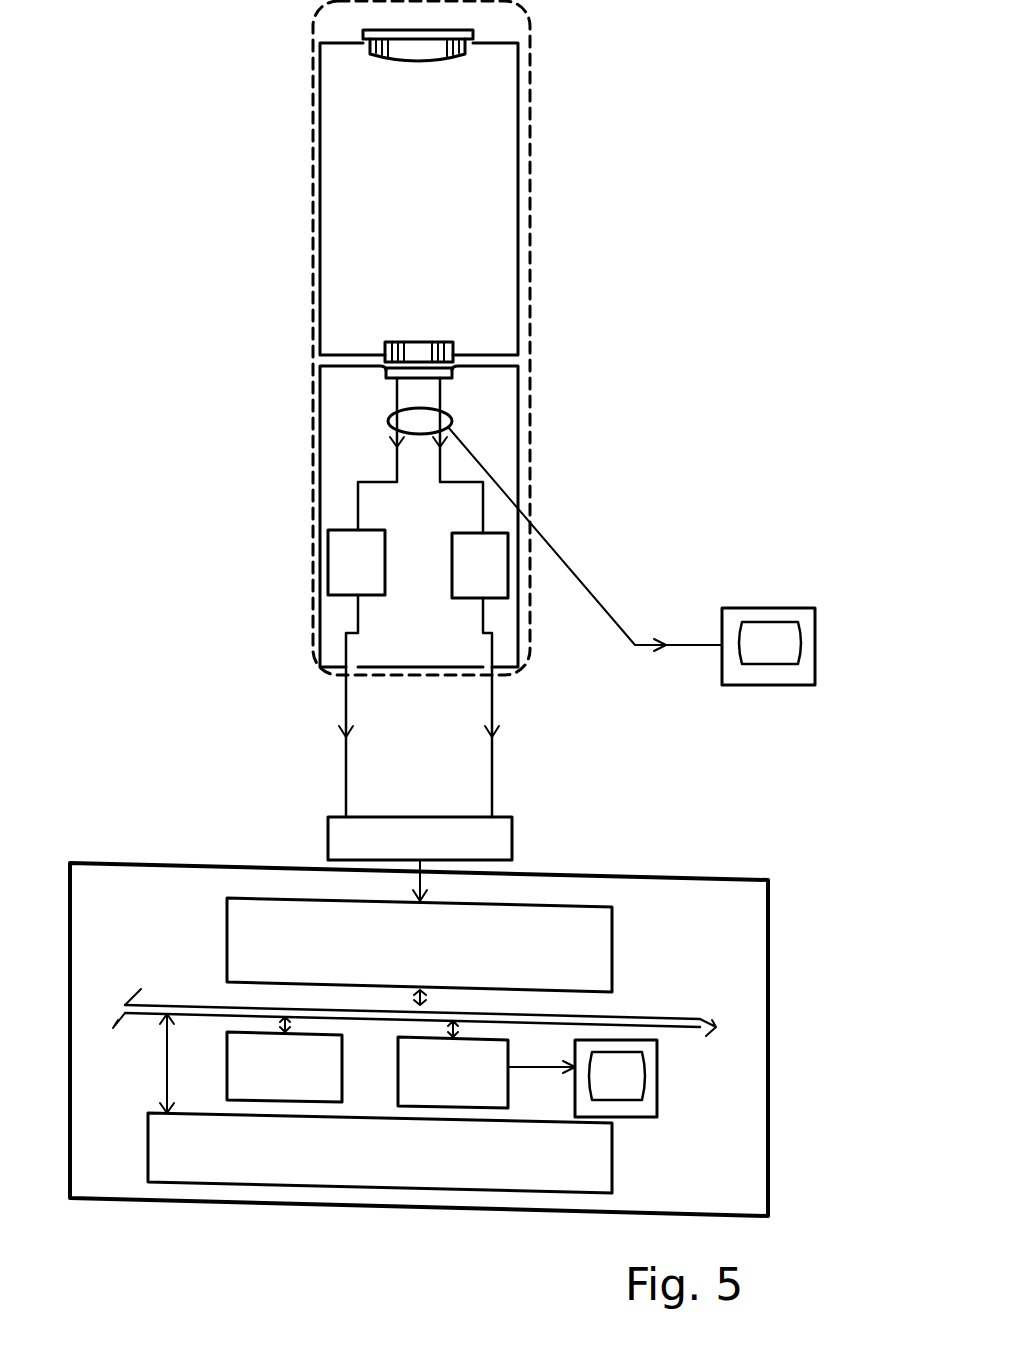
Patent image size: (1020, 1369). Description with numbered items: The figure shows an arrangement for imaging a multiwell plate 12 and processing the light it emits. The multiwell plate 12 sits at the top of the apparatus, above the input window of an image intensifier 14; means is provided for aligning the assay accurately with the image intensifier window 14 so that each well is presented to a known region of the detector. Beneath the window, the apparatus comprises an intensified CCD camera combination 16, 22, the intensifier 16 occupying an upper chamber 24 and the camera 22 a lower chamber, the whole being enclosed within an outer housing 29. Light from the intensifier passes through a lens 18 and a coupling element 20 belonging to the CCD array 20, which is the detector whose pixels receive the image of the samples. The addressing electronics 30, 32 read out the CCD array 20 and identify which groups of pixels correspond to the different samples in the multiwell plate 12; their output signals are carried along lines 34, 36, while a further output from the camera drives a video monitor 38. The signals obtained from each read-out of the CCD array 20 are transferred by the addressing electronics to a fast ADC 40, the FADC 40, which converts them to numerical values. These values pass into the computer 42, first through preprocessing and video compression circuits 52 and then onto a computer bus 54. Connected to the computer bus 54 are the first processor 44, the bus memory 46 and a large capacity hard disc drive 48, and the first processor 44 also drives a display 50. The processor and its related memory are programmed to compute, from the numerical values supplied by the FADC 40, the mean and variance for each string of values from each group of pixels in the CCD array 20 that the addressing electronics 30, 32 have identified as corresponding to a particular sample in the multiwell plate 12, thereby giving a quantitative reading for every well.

The multiwell plate 12 is at (363, 32).
The image intensifier window 14 is at (473, 36).
The intensified CCD camera combination 16 is at (521, 112).
The lens 18 is at (405, 342).
The CCD array 20 is at (386, 378).
The intensified CCD camera combination 22 is at (520, 470).
The upper chamber 24 is at (388, 199).
The light-tight enclosure 29 is at (531, 290).
The addressing electronics 30 is at (356, 562).
The addressing electronics 32 is at (480, 565).
The detector output signal line 34 is at (346, 710).
The detector output signal line 36 is at (492, 705).
The video monitor 38 is at (757, 687).
The fast ADC 40 is at (513, 843).
The computer 42 is at (658, 875).
The first processor 44 is at (486, 1064).
The bus memory 46 is at (380, 1103).
The large capacity hard disc drive 48 is at (284, 1059).
The display 50 is at (658, 1095).
The preprocessing and video compression circuits 52 is at (419, 945).
The computer bus 54 is at (690, 1021).